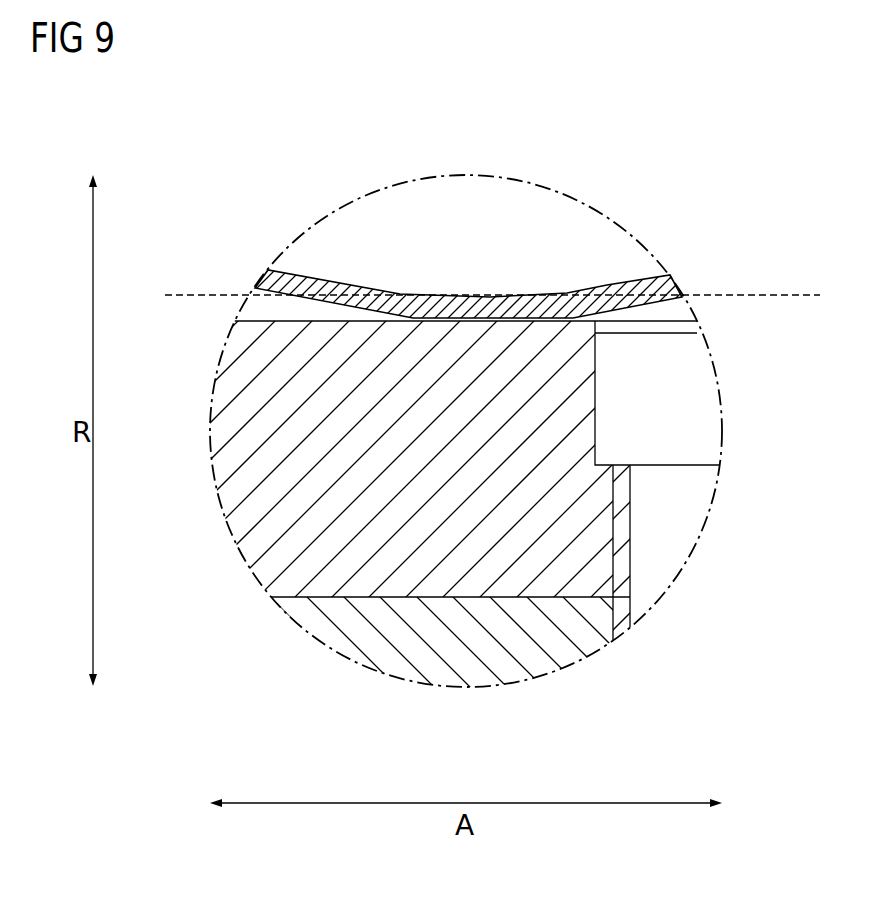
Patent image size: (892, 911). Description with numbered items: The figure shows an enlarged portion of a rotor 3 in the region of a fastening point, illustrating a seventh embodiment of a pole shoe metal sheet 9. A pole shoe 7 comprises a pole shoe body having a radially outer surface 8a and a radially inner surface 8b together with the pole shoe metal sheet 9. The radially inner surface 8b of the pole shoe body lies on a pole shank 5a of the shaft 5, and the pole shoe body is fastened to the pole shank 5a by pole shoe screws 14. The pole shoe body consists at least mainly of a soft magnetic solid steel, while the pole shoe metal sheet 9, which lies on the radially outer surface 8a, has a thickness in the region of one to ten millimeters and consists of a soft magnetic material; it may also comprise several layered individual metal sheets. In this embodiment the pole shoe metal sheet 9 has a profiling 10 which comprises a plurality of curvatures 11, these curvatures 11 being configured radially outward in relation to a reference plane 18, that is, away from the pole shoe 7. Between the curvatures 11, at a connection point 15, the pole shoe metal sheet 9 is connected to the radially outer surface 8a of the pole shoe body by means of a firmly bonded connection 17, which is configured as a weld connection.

The rotor 3 is at (699, 117).
The shaft 5 is at (446, 662).
The pole shank 5a is at (490, 655).
The pole shoe 7 is at (444, 500).
The radially outer surface 8a is at (444, 500).
The radially inner surface 8b is at (444, 500).
The pole shoe metal sheet 9 is at (477, 276).
The profiling 10 is at (477, 248).
The curvatures 11 is at (477, 248).
The pole shoe screws 14 is at (712, 410).
The connection point 15 is at (490, 322).
The firmly bonded connection 17 is at (489, 318).
The reference plane 18 is at (190, 295).